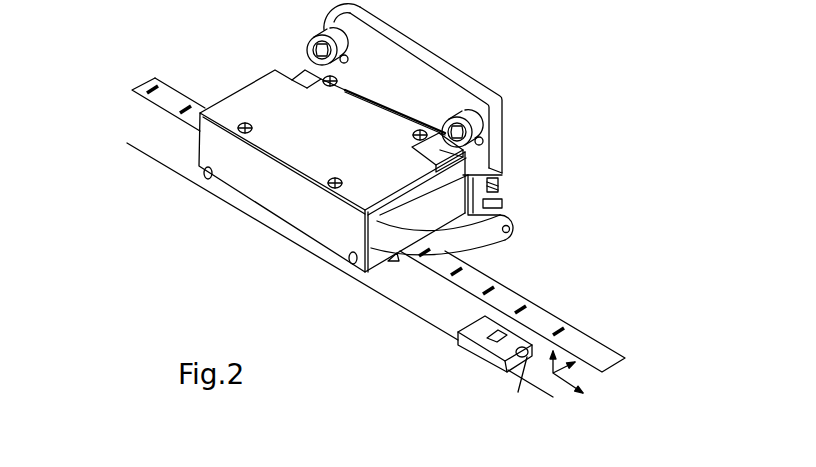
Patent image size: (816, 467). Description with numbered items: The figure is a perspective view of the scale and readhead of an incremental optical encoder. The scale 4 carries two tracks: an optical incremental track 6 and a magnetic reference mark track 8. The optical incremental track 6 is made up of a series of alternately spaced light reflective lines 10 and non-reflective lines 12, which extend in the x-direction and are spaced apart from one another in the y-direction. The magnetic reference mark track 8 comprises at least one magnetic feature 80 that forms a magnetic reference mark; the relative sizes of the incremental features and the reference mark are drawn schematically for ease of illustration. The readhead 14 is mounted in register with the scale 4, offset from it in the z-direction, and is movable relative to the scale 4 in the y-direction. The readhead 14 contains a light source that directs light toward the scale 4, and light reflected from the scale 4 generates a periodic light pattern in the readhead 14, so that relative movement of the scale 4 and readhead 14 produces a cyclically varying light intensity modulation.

The light reflective lines 10 is at (378, 225).
The non-reflective lines 12 is at (477, 278).
The readhead 14 is at (262, 85).
The magnetic feature 80 is at (480, 348).
The scale 4 is at (659, 362).
The optical incremental track 6 is at (128, 72).
The magnetic reference mark track 8 is at (124, 118).